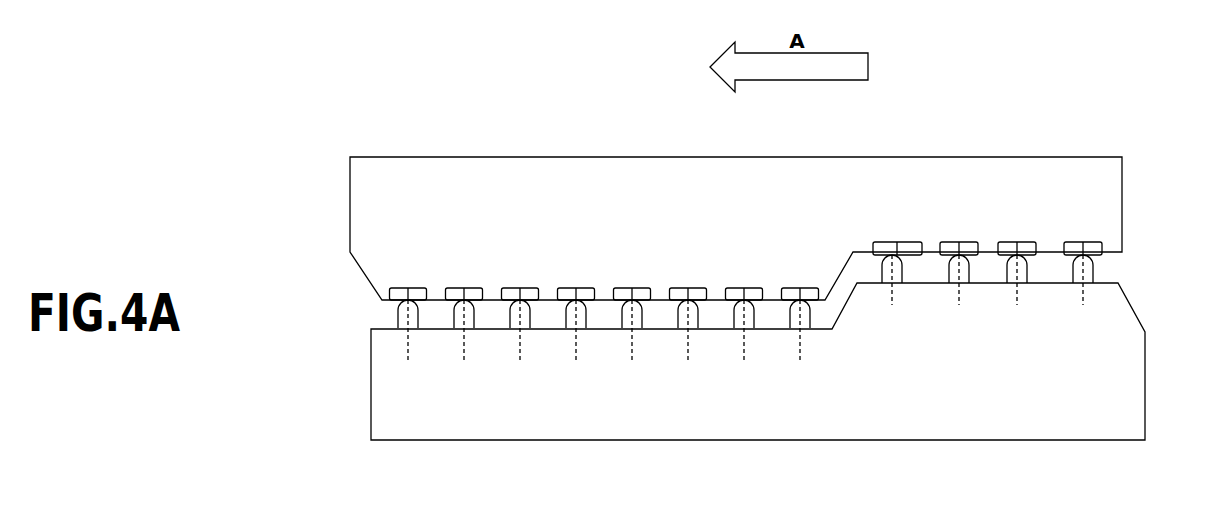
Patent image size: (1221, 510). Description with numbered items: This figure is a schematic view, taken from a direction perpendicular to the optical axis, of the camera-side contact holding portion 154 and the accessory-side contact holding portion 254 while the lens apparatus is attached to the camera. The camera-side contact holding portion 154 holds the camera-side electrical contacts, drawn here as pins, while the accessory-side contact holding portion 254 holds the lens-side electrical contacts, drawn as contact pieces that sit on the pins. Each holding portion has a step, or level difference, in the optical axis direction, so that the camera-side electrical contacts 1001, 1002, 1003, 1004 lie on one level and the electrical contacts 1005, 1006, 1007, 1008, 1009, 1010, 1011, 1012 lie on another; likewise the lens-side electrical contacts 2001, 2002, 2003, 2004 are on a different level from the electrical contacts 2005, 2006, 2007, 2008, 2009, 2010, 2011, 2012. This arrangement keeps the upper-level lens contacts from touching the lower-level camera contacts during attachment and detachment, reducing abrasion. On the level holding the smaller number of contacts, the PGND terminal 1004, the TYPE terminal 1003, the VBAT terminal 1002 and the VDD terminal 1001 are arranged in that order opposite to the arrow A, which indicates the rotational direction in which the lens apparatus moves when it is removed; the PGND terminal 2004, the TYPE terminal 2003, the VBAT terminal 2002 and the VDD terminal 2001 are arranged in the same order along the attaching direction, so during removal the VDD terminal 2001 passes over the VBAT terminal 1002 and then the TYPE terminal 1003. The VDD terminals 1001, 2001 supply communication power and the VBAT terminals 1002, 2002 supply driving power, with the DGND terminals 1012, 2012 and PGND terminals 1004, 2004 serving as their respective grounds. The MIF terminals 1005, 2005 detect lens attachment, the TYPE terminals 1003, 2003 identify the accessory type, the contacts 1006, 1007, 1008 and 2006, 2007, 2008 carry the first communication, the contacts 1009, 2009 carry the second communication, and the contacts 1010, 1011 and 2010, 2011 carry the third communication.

The accessory-side contact holding portion 254 is at (1112, 198).
The camera-side contact holding portion 154 is at (1130, 385).
The VDD terminal 2001 is at (1068, 242).
The VBAT terminal 2002 is at (1001, 242).
The TYPE terminal 2003 is at (943, 242).
The PGND terminal 2004 is at (876, 242).
The MIF terminal 2005 is at (784, 288).
The electrical contact for first communication 2006 is at (728, 288).
The electrical contact for first communication 2007 is at (672, 288).
The electrical contact for first communication 2008 is at (616, 288).
The electrical contact for second communication 2009 is at (560, 288).
The electrical contact for third communication 2010 is at (504, 288).
The electrical contact for third communication 2011 is at (449, 288).
The DGND terminal 2012 is at (384, 288).
The VDD terminal 1001 is at (1078, 305).
The VBAT terminal 1002 is at (1012, 305).
The TYPE terminal 1003 is at (956, 305).
The PGND terminal 1004 is at (890, 305).
The MIF terminal 1005 is at (794, 332).
The electrical contact for first communication 1006 is at (733, 332).
The electrical contact for first communication 1007 is at (682, 332).
The electrical contact for first communication 1008 is at (621, 332).
The electrical contact for second communication 1009 is at (570, 332).
The electrical contact for third communication 1010 is at (509, 332).
The electrical contact for third communication 1011 is at (458, 332).
The DGND terminal 1012 is at (397, 332).